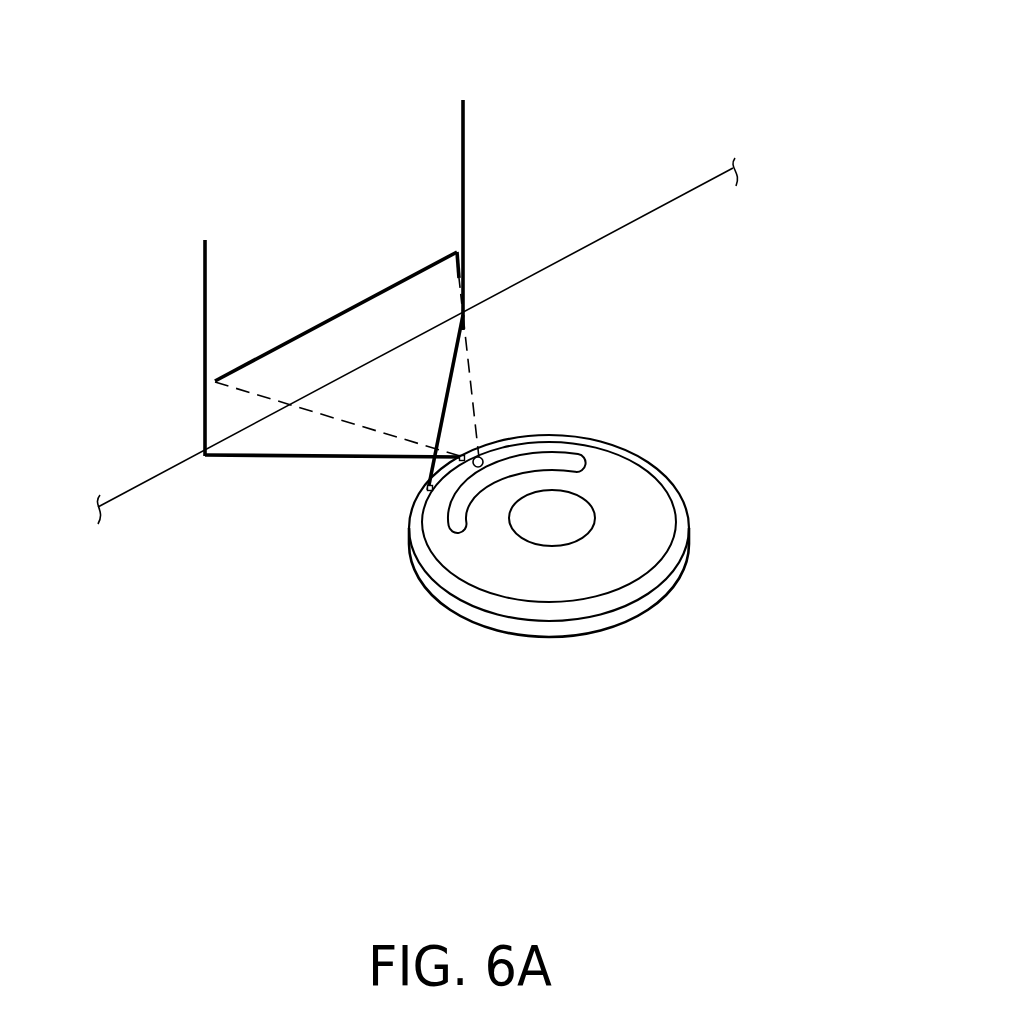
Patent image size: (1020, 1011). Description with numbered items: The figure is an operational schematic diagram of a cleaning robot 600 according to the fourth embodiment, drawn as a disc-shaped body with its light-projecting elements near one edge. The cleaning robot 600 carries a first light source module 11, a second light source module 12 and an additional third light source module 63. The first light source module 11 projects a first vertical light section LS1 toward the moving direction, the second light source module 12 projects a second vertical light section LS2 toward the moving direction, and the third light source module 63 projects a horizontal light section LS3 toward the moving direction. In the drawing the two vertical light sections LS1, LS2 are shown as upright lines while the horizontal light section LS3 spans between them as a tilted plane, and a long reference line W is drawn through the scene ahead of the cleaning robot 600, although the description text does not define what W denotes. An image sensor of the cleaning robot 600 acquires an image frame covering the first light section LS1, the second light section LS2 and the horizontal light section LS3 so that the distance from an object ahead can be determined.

The first vertical light section LS1 is at (206, 248).
The second vertical light section LS2 is at (465, 108).
The horizontal light section LS3 is at (346, 310).
The workpiece axis W is at (660, 180).
The first light source module 11 is at (462, 457).
The second light source module 12 is at (427, 488).
The third light source module 63 is at (480, 459).
The cleaning robot 600 is at (683, 498).